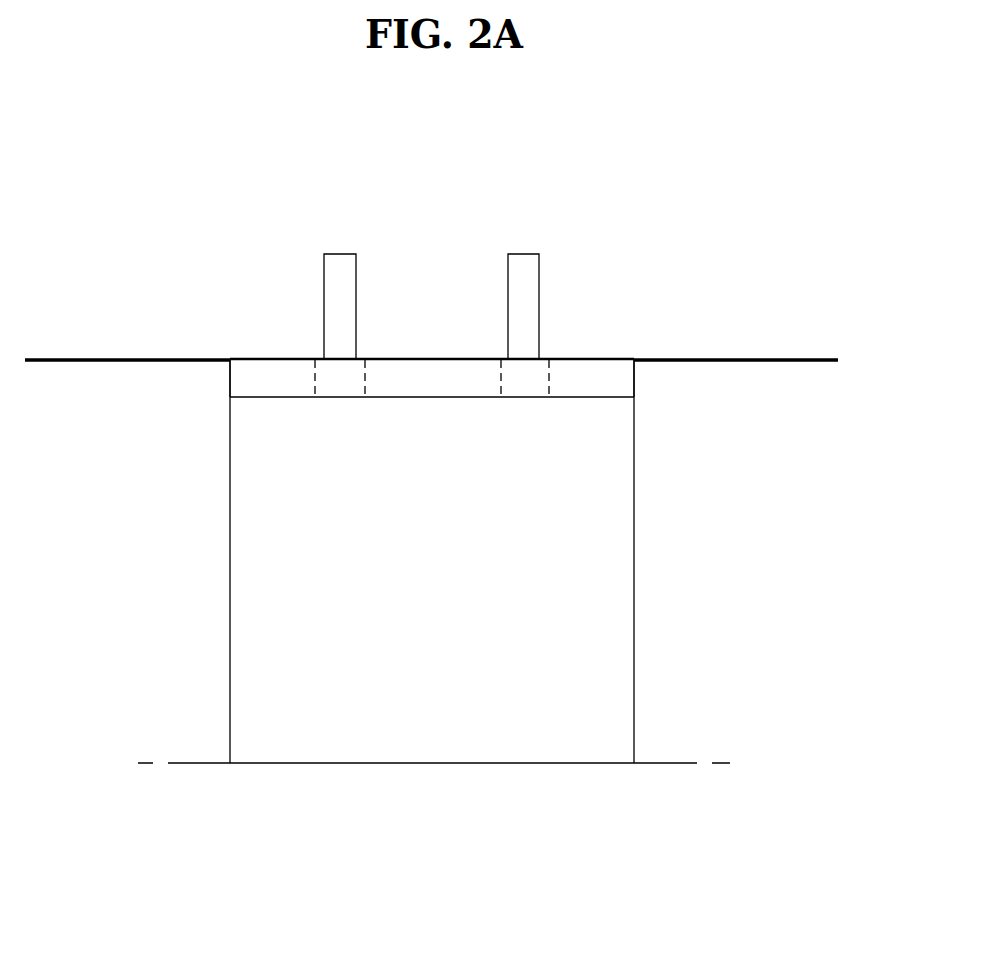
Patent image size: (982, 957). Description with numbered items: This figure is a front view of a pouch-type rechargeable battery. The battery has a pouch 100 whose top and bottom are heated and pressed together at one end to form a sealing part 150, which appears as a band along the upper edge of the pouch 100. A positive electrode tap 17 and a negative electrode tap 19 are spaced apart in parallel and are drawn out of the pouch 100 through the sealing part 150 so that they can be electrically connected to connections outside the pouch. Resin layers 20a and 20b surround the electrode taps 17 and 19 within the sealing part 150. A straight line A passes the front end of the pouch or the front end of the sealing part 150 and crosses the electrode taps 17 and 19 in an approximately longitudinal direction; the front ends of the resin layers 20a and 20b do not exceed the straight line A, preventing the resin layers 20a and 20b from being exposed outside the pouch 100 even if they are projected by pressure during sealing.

The positive electrode tap 17 is at (341, 262).
The negative electrode tap 19 is at (525, 262).
The resin layer 20a is at (333, 368).
The resin layer 20b is at (532, 366).
The sealing part 150 is at (627, 380).
The pouch 100 is at (636, 553).
The straight line A is at (782, 358).